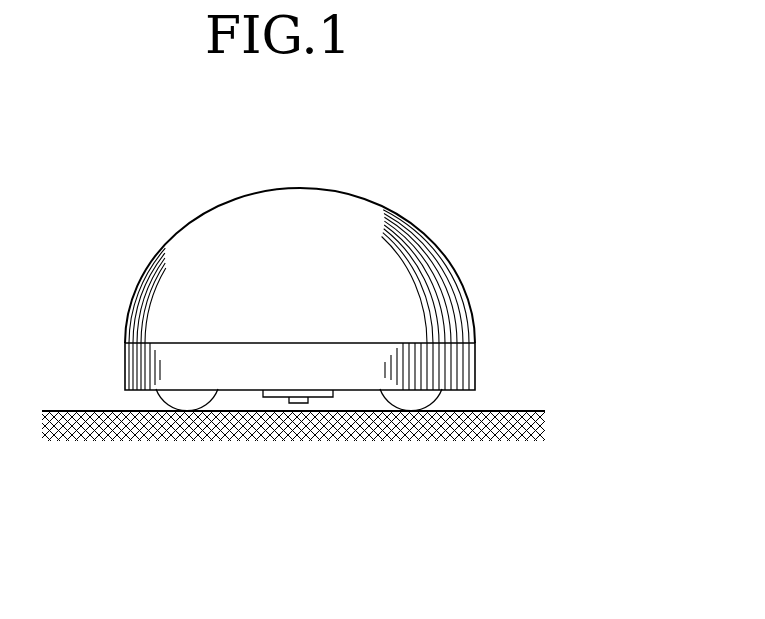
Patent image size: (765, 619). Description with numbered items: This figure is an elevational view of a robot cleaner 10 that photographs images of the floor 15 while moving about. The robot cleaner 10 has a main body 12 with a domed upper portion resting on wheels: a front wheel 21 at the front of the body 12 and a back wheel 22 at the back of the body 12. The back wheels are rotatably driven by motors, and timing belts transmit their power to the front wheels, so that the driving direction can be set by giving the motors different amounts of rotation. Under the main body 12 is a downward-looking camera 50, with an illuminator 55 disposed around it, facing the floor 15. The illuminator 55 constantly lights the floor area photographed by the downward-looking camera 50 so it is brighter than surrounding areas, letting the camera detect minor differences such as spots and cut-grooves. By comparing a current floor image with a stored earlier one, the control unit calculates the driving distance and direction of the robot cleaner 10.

The robot cleaner 10 is at (402, 207).
The main body 12 is at (460, 367).
The front wheel 21 is at (173, 397).
The back wheel 22 is at (423, 403).
The illuminator 55 is at (273, 394).
The downward-looking camera 50 is at (297, 405).
The floor 15 is at (523, 413).